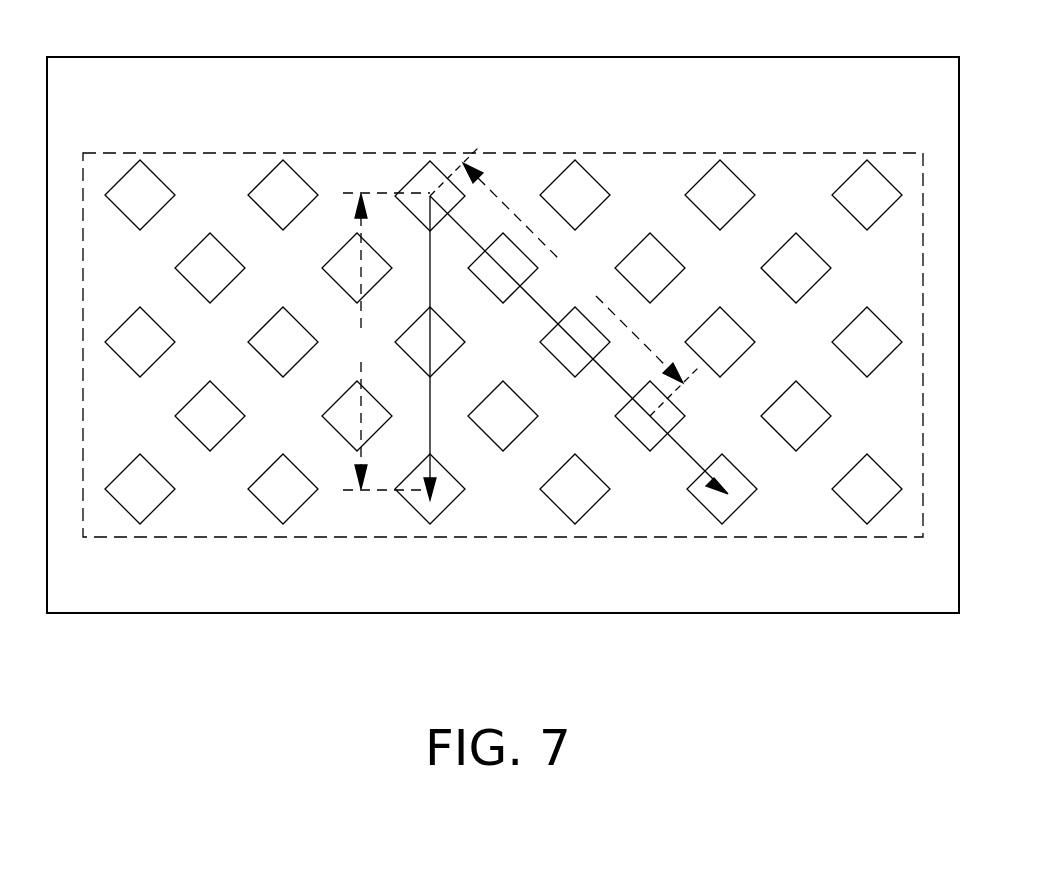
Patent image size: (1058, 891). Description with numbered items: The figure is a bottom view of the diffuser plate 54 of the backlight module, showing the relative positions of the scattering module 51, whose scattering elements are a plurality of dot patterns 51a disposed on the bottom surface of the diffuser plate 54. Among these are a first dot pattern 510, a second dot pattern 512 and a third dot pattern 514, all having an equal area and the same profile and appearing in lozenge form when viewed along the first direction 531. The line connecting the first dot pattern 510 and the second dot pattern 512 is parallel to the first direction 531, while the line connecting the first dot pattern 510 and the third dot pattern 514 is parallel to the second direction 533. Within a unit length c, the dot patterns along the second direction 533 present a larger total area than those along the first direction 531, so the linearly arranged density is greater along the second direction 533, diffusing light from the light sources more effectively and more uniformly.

The diffuser plate 54 is at (625, 57).
The scattering module 51 is at (667, 153).
The dot patterns 51a is at (273, 170).
The first dot pattern 510 is at (412, 181).
The second dot pattern 512 is at (447, 507).
The third dot pattern 514 is at (735, 503).
The first direction 531 is at (430, 432).
The second direction 533 is at (688, 448).